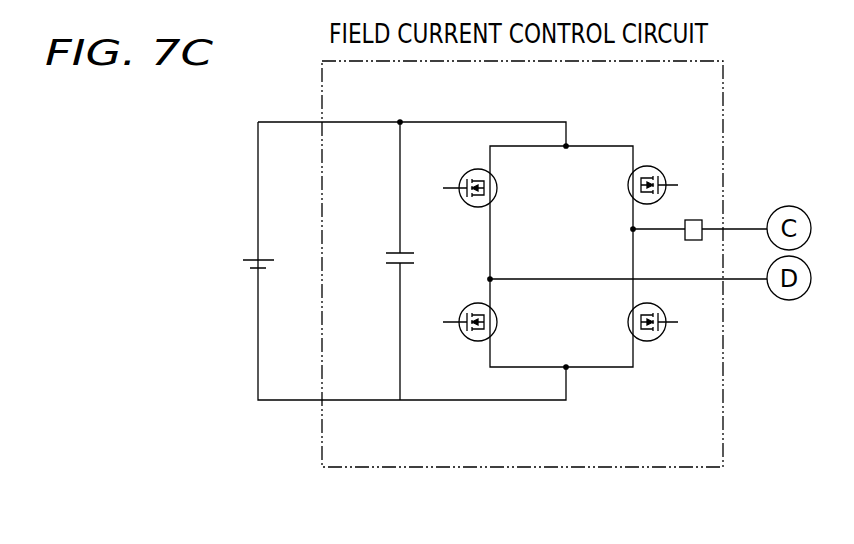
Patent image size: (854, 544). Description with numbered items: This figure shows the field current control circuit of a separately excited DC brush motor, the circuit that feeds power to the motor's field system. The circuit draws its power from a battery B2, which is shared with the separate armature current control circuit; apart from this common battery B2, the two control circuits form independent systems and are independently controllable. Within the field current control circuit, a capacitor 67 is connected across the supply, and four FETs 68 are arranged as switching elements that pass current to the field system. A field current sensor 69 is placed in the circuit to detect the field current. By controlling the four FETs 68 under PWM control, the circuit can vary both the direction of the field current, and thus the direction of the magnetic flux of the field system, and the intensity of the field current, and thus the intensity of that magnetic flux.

The battery B2 is at (255, 260).
The capacitor 67 is at (395, 255).
The FET 68 is at (497, 181).
The field current sensor 69 is at (692, 218).